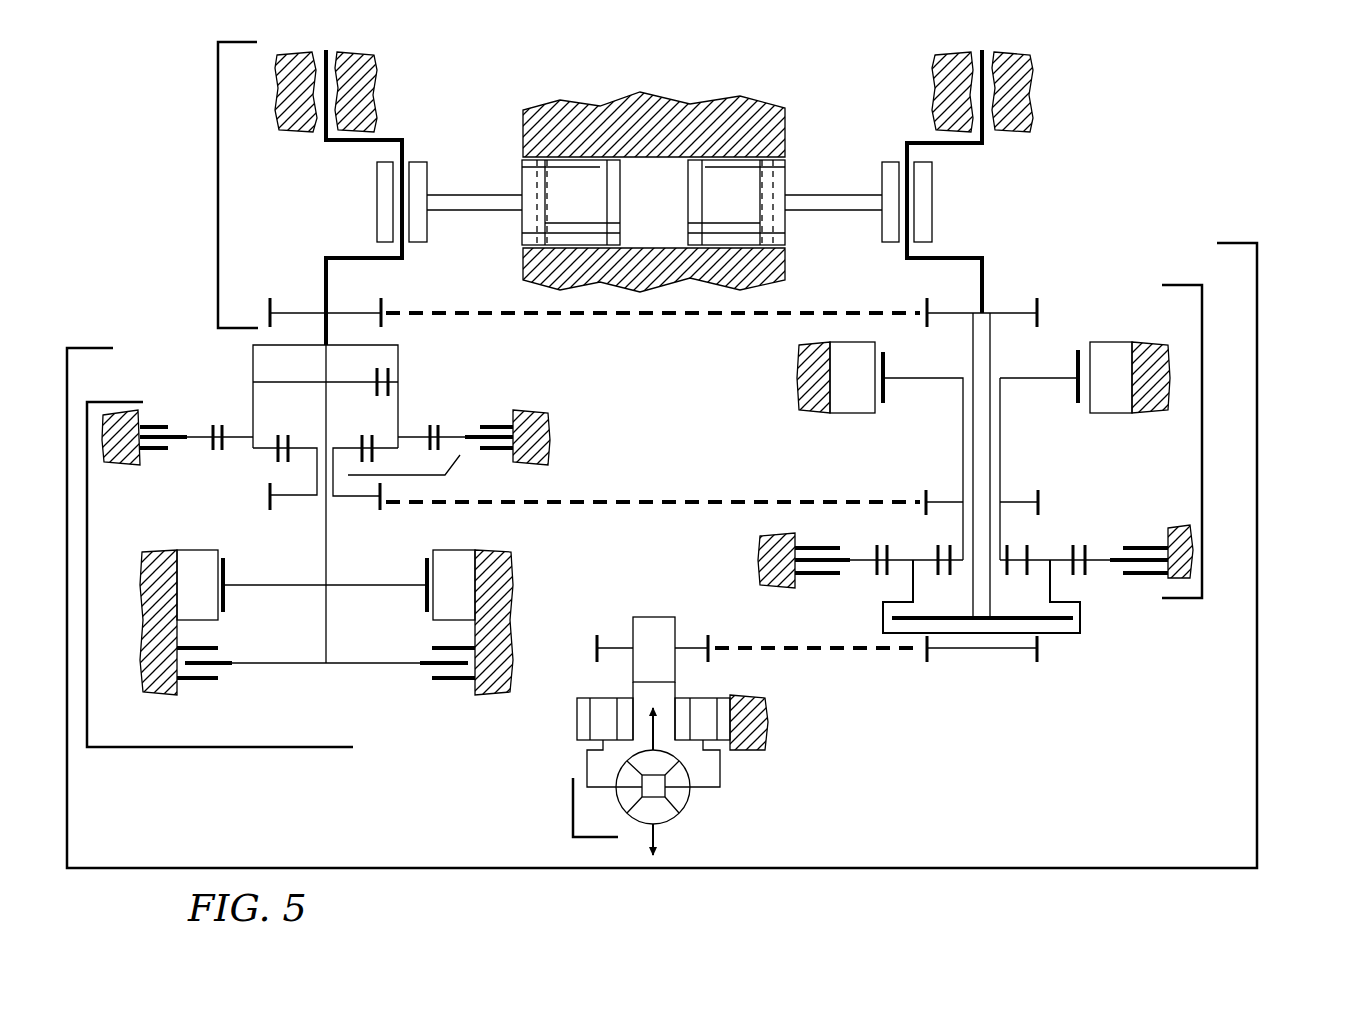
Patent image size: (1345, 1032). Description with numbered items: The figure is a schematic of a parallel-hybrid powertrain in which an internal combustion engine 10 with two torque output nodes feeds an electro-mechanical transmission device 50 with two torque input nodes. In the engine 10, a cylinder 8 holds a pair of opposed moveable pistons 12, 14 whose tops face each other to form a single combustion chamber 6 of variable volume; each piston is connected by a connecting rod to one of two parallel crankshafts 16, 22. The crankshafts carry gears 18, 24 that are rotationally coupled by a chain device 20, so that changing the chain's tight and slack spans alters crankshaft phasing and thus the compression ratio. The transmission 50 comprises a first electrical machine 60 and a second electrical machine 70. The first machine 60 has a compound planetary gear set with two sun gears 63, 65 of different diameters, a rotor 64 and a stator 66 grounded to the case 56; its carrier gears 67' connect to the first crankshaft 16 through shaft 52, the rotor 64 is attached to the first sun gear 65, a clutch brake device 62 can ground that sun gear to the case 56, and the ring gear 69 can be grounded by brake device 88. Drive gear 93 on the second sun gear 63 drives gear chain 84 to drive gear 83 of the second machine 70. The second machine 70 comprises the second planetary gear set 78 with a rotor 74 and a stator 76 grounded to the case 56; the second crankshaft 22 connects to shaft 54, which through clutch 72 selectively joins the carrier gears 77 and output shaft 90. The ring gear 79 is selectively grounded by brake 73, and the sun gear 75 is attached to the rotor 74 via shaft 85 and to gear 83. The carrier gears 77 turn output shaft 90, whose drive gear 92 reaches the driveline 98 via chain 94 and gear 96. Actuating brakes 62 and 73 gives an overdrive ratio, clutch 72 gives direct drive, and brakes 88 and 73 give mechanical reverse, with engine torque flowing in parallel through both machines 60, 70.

The combustion chamber 6 is at (662, 185).
The cylinder 8 is at (651, 145).
The internal combustion engine 10 is at (217, 257).
The moveable piston 12 is at (578, 173).
The moveable piston 14 is at (728, 175).
The first crankshaft 16 is at (330, 92).
The gear 18 is at (305, 312).
The chain device 20 is at (495, 310).
The second crankshaft 22 is at (985, 95).
The gear 24 is at (1000, 312).
The electro-mechanical transmission device 50 is at (1258, 565).
The shaft 52 is at (320, 335).
The shaft 54 is at (985, 368).
The case 56 is at (158, 680).
The first electrical machine 60 is at (200, 750).
The clutch brake device 62 is at (215, 672).
The second sun gear 63 is at (343, 448).
The rotor 64 is at (228, 600).
The first sun gear 65 is at (345, 380).
The stator 66 is at (193, 585).
The carrier gears 67' is at (431, 366).
The ring gear 69 is at (452, 432).
The second electrical machine 70 is at (1205, 580).
The clutch 72 is at (1065, 625).
The brake 73 is at (1130, 548).
The rotor 74 is at (1060, 340).
The sun gear 75 is at (1003, 565).
The stator 76 is at (1110, 345).
The carrier gears 77 is at (920, 555).
The second planetary gear set 78 is at (1084, 587).
The ring gear 79 is at (857, 555).
The drive gear 83 is at (1015, 500).
The gear chain 84 is at (655, 500).
The shaft 85 is at (963, 410).
The brake device 88 is at (165, 428).
The output shaft 90 is at (1053, 633).
The drive gear 92 is at (963, 650).
The drive gear 93 is at (292, 497).
The chain 94 is at (835, 652).
The gear 96 is at (617, 650).
The driveline 98 is at (573, 803).